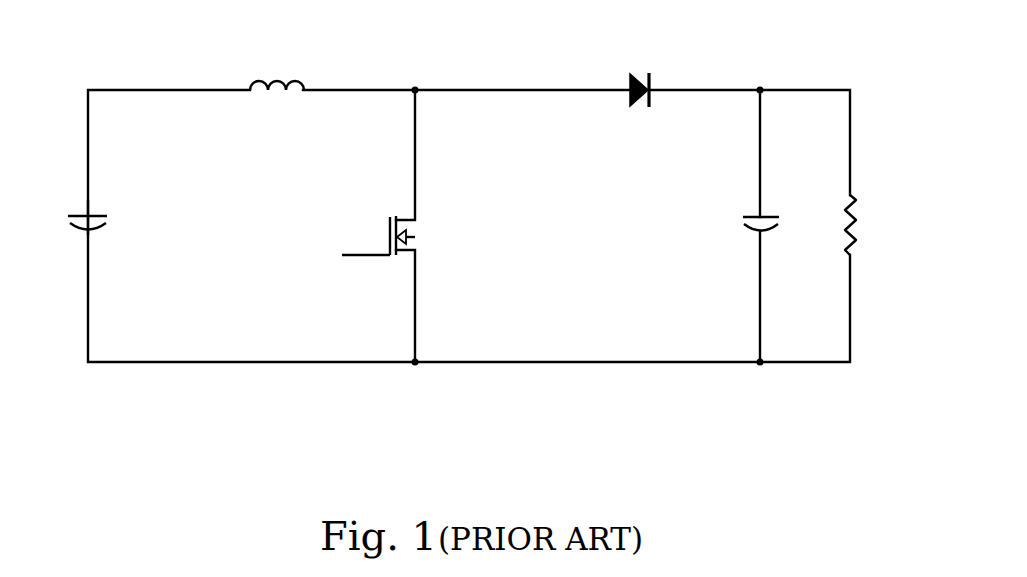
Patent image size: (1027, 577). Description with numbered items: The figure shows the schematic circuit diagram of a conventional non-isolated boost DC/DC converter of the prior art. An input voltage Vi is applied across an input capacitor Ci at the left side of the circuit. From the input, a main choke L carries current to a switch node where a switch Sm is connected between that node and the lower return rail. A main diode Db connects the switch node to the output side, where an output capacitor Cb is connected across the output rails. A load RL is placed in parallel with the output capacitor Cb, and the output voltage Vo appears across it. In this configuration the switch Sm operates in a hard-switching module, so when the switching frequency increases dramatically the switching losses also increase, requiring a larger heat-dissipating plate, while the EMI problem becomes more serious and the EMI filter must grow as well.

The main choke L is at (277, 65).
The input voltage Vi is at (62, 229).
The input capacitor Ci is at (97, 216).
The switch Sm is at (376, 236).
The main diode Db is at (630, 80).
The output capacitor Cb is at (774, 212).
The load RL is at (870, 225).
The output voltage Vo is at (891, 220).